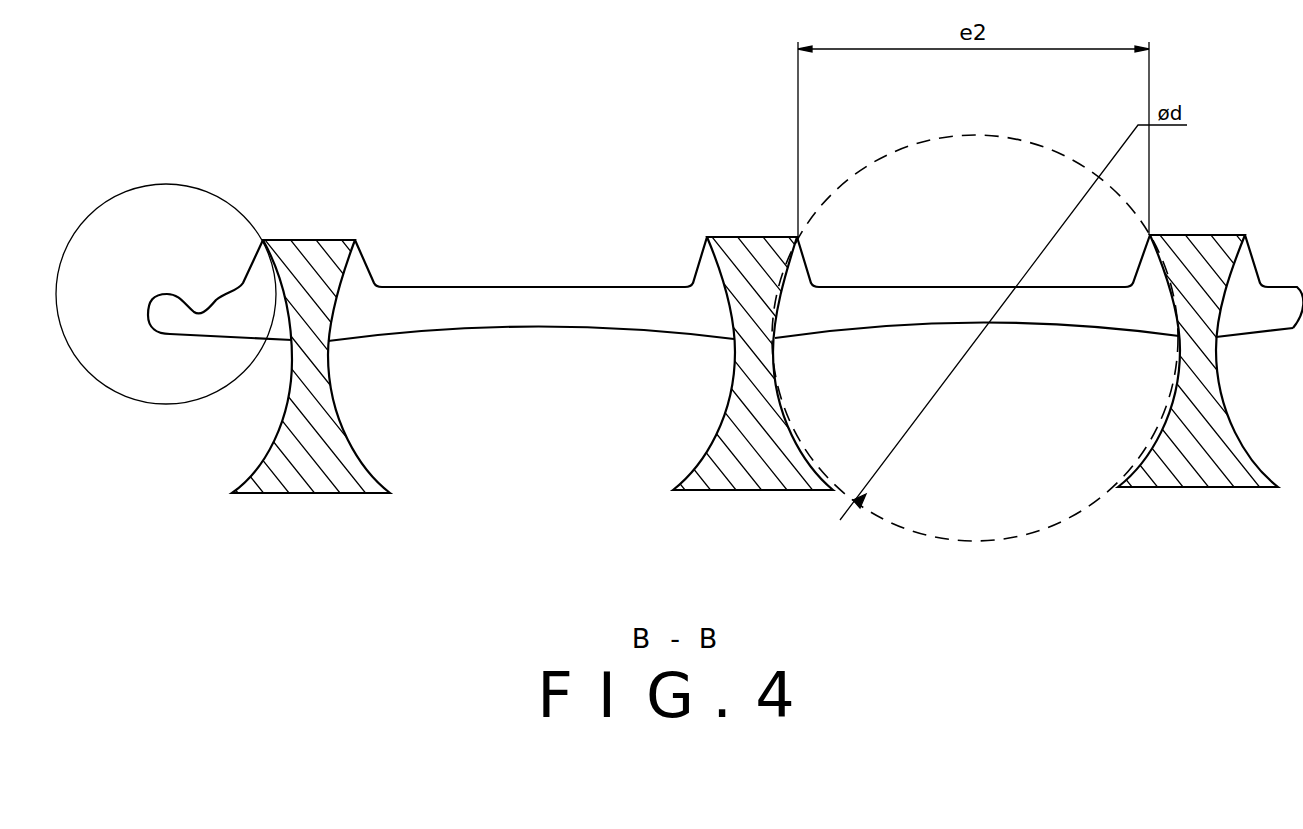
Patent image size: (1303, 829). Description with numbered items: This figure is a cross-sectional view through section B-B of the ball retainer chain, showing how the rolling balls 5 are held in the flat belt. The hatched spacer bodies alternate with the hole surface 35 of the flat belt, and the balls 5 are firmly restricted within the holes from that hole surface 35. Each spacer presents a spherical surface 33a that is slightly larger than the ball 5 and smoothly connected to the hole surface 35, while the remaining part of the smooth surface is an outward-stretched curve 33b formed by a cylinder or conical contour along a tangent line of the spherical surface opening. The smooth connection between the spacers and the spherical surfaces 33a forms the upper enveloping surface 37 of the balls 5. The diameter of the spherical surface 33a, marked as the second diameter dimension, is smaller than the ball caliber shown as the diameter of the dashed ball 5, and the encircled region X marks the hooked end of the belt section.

The upper enveloping surface 37 is at (650, 147).
The spherical surface 33a is at (350, 313).
The outward-stretched curve 33b is at (273, 433).
The hole surface 35 is at (532, 317).
The ball 5 is at (1038, 497).
The detail region X is at (133, 404).